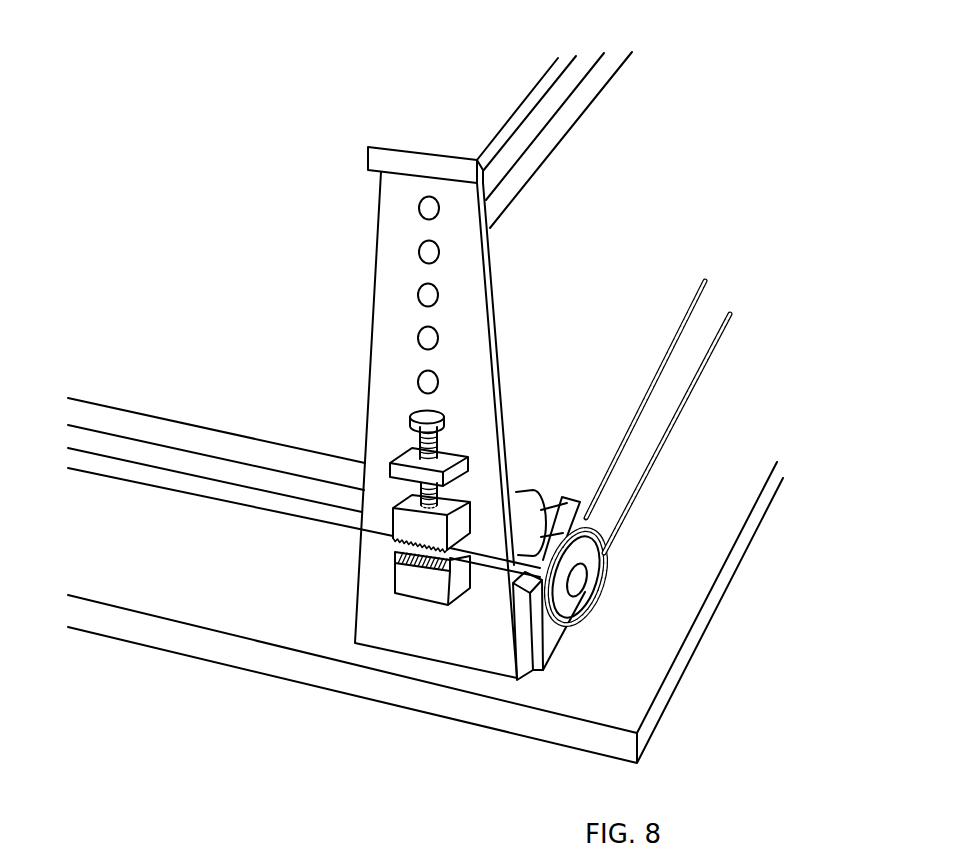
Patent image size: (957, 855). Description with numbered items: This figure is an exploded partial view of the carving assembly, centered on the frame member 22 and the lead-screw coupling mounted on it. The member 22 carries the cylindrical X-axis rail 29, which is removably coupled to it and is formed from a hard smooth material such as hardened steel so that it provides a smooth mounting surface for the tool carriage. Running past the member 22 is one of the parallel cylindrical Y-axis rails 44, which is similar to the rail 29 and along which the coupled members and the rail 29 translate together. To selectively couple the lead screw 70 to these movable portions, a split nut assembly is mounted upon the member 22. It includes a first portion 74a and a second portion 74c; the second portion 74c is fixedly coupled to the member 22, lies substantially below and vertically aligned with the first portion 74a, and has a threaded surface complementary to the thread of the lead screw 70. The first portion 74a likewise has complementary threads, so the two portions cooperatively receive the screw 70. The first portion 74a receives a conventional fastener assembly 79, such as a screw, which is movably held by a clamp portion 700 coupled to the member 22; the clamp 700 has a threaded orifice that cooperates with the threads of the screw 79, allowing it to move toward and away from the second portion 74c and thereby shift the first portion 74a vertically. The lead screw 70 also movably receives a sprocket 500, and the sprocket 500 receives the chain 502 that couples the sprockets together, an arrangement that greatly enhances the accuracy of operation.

The member 22 is at (385, 384).
The X-axis rail 29 is at (548, 149).
The Y-axis rail 44 is at (158, 433).
The lead screw 70 is at (121, 472).
The clamp portion 700 is at (450, 453).
The fastener assembly 79 is at (392, 508).
The first portion 74a is at (405, 532).
The second portion 74c is at (424, 582).
The sprocket 500 is at (585, 593).
The chain 502 is at (698, 378).